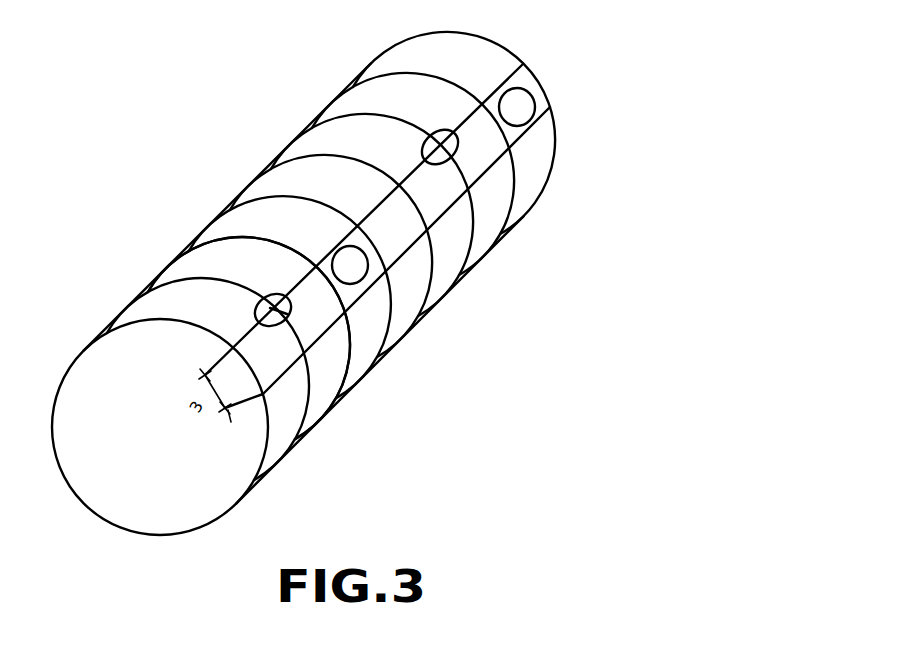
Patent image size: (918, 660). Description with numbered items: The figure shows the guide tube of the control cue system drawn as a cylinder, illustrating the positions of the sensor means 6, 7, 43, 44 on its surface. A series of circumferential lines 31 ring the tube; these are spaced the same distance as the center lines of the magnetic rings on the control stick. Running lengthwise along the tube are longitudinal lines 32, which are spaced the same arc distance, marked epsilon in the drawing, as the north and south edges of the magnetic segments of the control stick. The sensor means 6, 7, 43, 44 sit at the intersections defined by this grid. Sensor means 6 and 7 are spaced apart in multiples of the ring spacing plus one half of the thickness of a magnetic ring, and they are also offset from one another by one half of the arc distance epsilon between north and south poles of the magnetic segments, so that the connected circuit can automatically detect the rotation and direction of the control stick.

The circumferential lines 31 is at (172, 283).
The longitudinal lines 32 is at (497, 130).
The sensor means 6 is at (348, 385).
The sensor means 7 is at (517, 108).
The sensor means 43 is at (350, 264).
The sensor means 44 is at (443, 147).